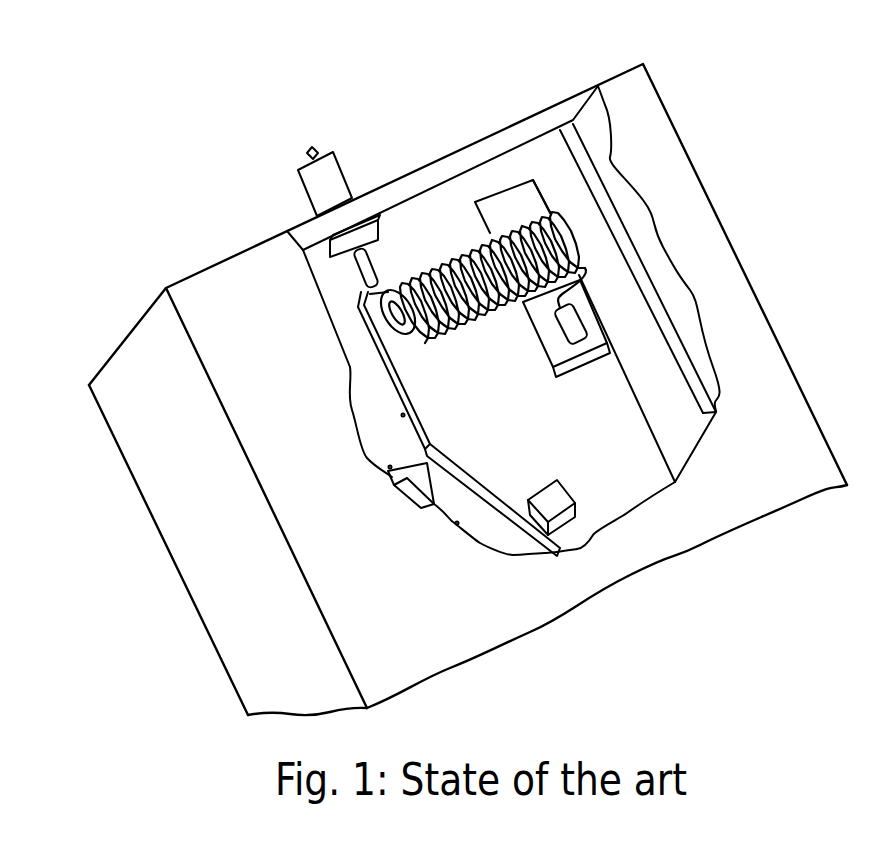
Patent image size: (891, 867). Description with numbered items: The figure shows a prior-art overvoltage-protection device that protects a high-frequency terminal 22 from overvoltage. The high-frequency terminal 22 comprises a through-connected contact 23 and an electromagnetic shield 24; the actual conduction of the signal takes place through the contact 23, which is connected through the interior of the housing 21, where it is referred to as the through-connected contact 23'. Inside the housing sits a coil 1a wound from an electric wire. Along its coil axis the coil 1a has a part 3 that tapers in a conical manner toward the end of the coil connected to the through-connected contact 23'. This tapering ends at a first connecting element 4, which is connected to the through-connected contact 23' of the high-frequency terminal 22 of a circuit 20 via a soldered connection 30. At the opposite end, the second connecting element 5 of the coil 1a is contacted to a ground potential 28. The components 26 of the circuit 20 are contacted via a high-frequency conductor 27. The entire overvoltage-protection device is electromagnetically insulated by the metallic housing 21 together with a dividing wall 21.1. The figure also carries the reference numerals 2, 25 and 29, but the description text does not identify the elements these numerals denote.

The housing 2 is at (807, 453).
The circuit 20 is at (768, 102).
The housing 21 is at (477, 140).
The dividing wall 21.1 is at (580, 172).
The high-frequency terminal 22 is at (284, 165).
The through-connected contact 23 is at (342, 136).
The electromagnetic shield 24 is at (345, 186).
The through-connected contact 23' is at (383, 248).
The soldered connection 30 is at (352, 273).
The first connecting element 4 is at (345, 321).
The tapering part 3 is at (390, 382).
The high-frequency conductor 27 is at (403, 415).
The components 26 is at (413, 495).
The corner 25 is at (657, 479).
The ground potential 28 is at (568, 360).
The fastening block 29 is at (560, 332).
The second connecting element 5 is at (560, 307).
The coil 1a is at (465, 371).